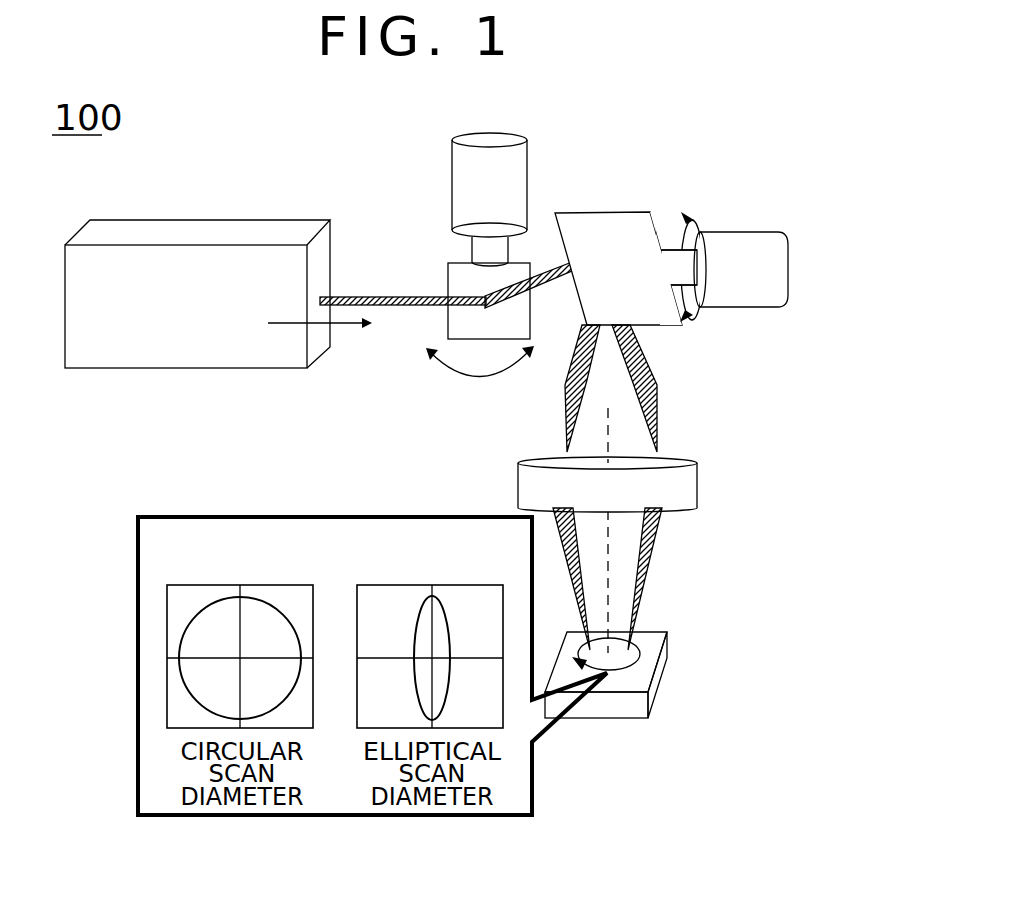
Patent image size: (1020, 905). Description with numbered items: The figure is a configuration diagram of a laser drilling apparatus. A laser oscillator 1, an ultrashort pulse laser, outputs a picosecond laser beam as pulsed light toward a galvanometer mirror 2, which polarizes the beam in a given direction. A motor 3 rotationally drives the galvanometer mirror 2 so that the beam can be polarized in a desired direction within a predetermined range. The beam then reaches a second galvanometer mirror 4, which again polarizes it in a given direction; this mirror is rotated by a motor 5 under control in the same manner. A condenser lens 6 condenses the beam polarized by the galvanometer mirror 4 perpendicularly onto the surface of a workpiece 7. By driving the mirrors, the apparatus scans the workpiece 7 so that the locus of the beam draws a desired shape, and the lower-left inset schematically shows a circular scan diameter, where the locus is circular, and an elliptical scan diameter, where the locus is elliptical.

The laser oscillator 1 is at (153, 221).
The galvanometer mirror 2 is at (448, 273).
The motor 3 is at (452, 195).
The galvanometer mirror 4 is at (573, 213).
The motor 5 is at (735, 308).
The condenser lens 6 is at (698, 486).
The workpiece 7 is at (668, 636).